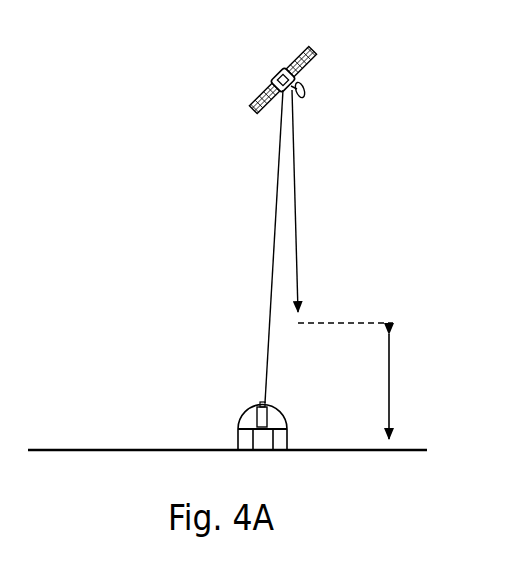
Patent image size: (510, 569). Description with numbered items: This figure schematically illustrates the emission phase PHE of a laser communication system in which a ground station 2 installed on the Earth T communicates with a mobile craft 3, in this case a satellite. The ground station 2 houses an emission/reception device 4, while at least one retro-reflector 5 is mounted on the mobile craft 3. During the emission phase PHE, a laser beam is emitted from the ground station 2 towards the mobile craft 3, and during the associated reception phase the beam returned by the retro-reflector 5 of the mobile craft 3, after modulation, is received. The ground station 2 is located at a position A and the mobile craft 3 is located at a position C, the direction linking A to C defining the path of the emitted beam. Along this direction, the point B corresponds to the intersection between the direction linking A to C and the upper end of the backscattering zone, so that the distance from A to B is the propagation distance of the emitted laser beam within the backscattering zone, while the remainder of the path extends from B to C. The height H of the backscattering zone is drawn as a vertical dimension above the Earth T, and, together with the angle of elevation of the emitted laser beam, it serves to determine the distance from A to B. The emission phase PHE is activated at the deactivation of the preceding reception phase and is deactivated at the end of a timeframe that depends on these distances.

The mobile craft 3 is at (258, 62).
The retro-reflector 5 is at (298, 75).
The position of the mobile craft C is at (255, 84).
The emission phase PHE is at (262, 218).
The point B is at (307, 313).
The height of the backscattering zone H is at (405, 386).
The ground station 2 is at (230, 404).
The emission/reception device 4 is at (267, 418).
The position of the ground station A is at (274, 396).
The Earth T is at (108, 450).